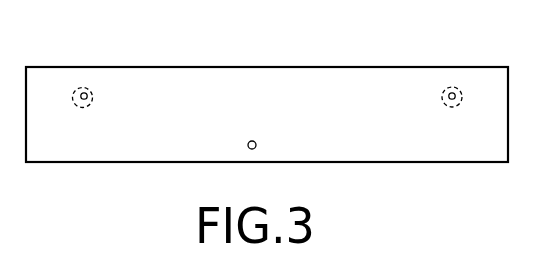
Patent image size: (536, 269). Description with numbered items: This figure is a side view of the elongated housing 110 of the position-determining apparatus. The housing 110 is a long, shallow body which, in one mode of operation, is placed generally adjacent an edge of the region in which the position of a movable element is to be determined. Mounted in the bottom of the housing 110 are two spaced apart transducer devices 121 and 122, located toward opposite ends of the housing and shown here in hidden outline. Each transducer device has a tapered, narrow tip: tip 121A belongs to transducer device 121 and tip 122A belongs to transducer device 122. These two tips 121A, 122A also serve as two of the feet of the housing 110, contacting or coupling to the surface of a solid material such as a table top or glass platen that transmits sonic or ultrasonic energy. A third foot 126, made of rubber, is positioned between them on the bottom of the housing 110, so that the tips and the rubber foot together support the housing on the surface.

The elongated housing 110 is at (242, 75).
The transducer device 121 is at (75, 88).
The tapered tip 121A is at (88, 96).
The transducer device 122 is at (459, 105).
The tapered tip 122A is at (449, 91).
The third foot 126 is at (256, 144).